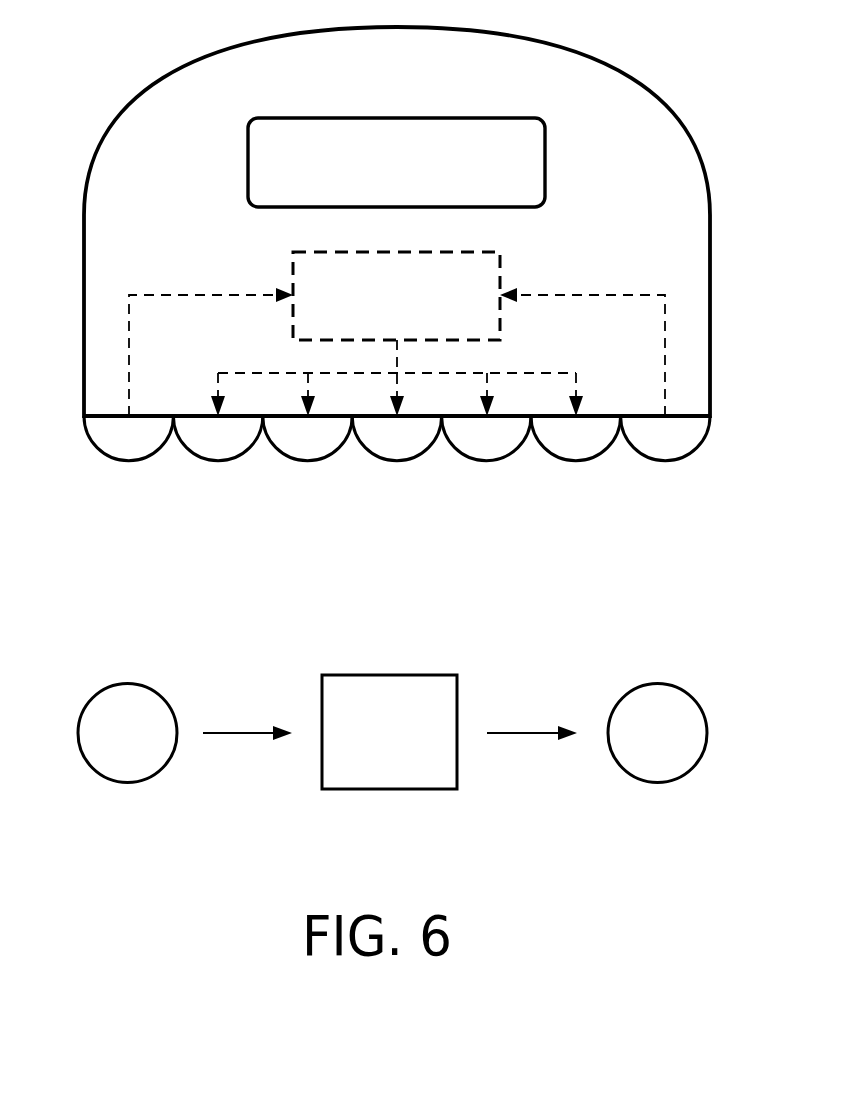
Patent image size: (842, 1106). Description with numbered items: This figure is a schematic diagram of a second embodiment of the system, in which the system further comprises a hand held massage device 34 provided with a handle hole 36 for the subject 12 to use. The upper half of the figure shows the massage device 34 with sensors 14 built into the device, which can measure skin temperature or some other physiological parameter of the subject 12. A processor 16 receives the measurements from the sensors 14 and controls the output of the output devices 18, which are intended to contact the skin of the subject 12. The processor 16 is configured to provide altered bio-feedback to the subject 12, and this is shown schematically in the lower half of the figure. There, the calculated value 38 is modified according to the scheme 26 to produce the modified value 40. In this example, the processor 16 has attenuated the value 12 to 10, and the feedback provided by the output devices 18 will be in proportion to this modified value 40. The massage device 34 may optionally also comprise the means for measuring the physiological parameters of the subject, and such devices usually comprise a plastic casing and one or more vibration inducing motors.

The attenuated value 10 is at (657, 733).
The subject 12 is at (127, 733).
The sensors 14 is at (86, 438).
The processor 16 is at (503, 260).
The output devices 18 is at (218, 461).
The scheme 26 is at (389, 790).
The hand held massage device 34 is at (712, 316).
The handle hole 36 is at (547, 161).
The calculated value 38 is at (127, 764).
The modified value 40 is at (657, 764).